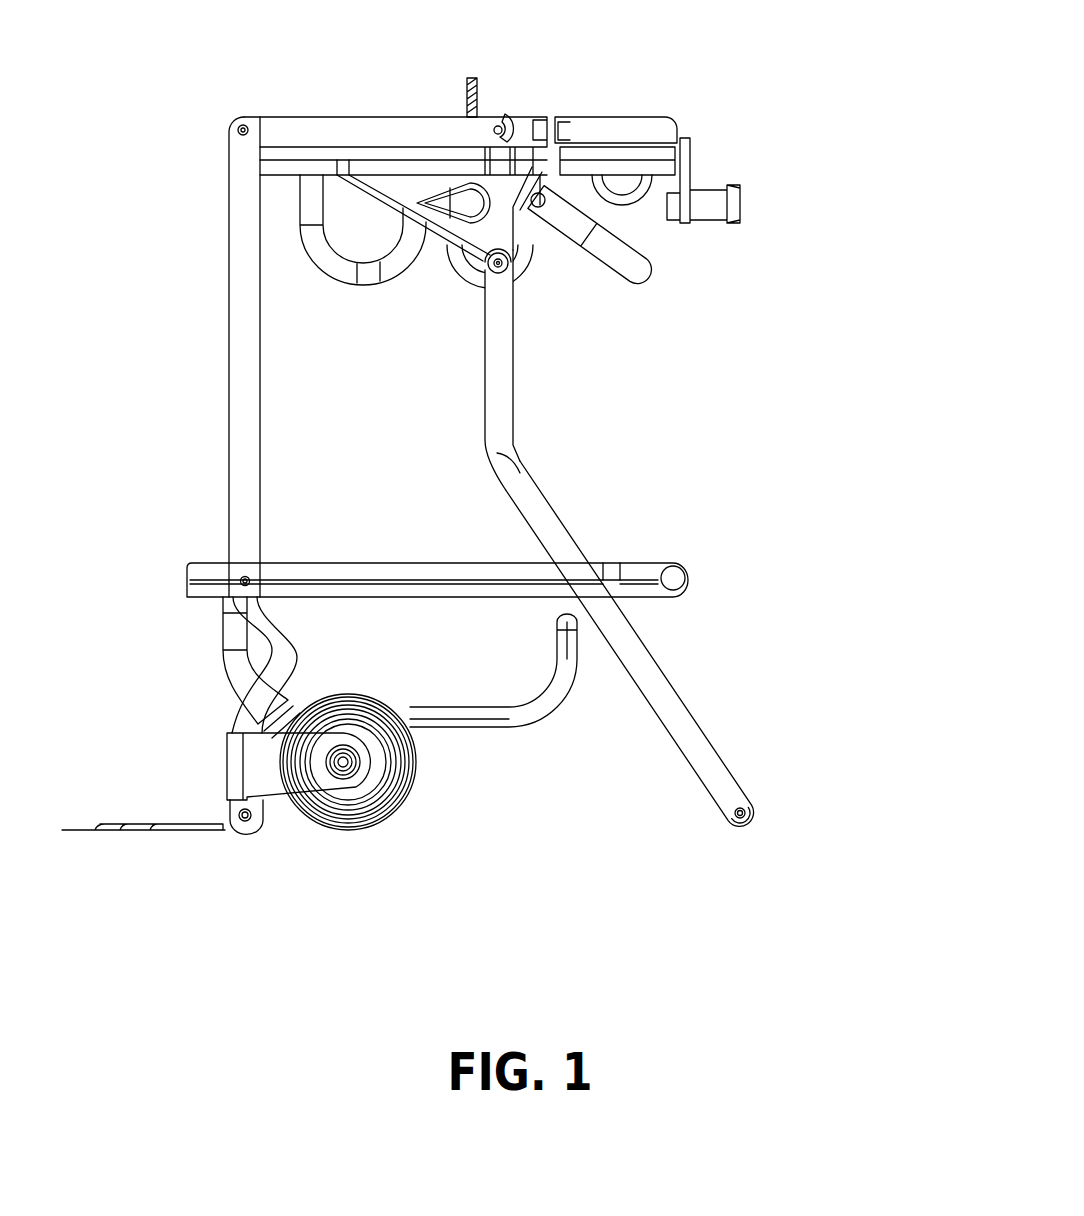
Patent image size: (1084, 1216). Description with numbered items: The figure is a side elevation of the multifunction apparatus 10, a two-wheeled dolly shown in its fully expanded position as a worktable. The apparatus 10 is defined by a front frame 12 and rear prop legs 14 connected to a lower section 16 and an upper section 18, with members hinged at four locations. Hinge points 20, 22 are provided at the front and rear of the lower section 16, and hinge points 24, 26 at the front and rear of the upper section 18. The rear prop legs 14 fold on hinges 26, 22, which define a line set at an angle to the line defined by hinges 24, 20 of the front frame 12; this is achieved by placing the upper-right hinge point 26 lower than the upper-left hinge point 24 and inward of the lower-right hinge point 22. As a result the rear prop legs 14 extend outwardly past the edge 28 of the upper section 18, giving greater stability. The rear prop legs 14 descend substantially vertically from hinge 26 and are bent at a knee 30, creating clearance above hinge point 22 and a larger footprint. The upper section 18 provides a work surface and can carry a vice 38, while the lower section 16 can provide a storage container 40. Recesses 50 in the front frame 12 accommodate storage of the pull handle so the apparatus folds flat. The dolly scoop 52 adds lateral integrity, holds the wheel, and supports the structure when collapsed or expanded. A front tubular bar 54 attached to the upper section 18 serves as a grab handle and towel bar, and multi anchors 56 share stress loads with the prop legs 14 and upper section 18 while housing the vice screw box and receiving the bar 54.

The multifunction apparatus 10 is at (790, 392).
The front frame 12 is at (243, 398).
The rear prop legs 14 is at (663, 688).
The lower section 16 is at (345, 578).
The upper section 18 is at (380, 130).
The hinge point 20 is at (243, 586).
The hinge point 22 is at (603, 613).
The hinge point 24 is at (240, 131).
The hinge point 26 is at (507, 270).
The edge 28 is at (680, 125).
The knee 30 is at (497, 455).
The vice 38 is at (623, 153).
The storage container 40 is at (490, 672).
The recesses 50 is at (283, 660).
The dolly scoop 52 is at (167, 827).
The front tubular bar 54 is at (633, 262).
The multi anchors 56 is at (427, 210).